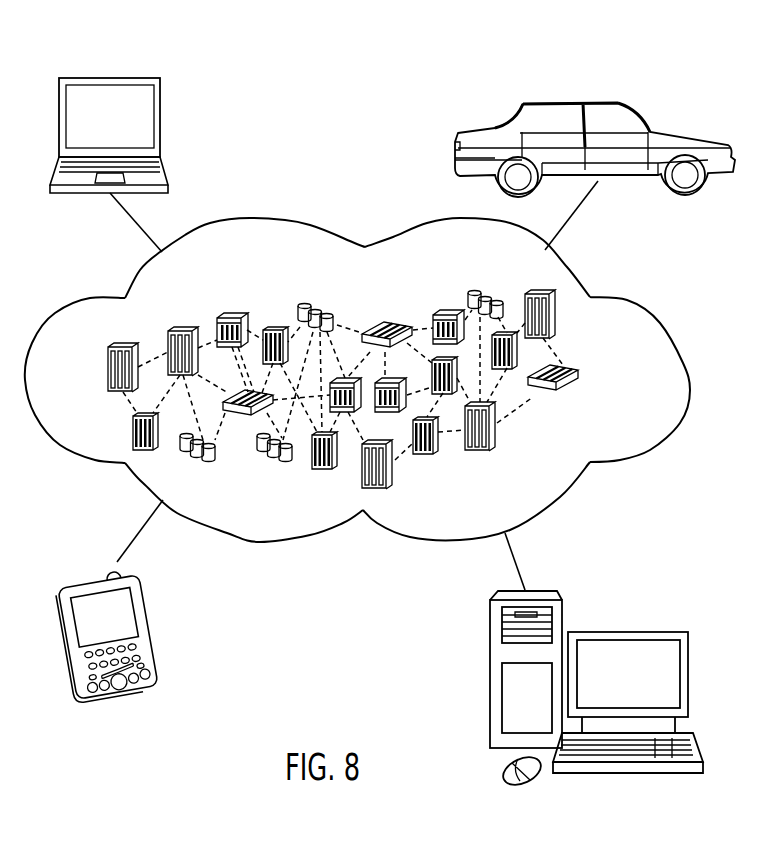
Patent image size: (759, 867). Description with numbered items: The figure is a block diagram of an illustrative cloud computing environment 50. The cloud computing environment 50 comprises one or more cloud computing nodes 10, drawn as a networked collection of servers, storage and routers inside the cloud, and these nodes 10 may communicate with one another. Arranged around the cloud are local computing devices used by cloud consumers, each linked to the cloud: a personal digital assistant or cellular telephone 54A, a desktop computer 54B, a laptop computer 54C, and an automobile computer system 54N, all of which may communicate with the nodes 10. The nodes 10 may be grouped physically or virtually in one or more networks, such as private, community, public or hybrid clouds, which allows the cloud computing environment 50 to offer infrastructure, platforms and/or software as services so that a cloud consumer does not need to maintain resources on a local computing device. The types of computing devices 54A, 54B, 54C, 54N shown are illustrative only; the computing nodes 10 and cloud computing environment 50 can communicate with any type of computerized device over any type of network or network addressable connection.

The cloud computing nodes 10 is at (594, 380).
The cloud computing environment 50 is at (641, 300).
The personal digital assistant (PDA) or cellular telephone 54A is at (92, 577).
The desktop computer 54B is at (630, 630).
The laptop computer 54C is at (108, 78).
The automobile computer system 54N is at (577, 103).